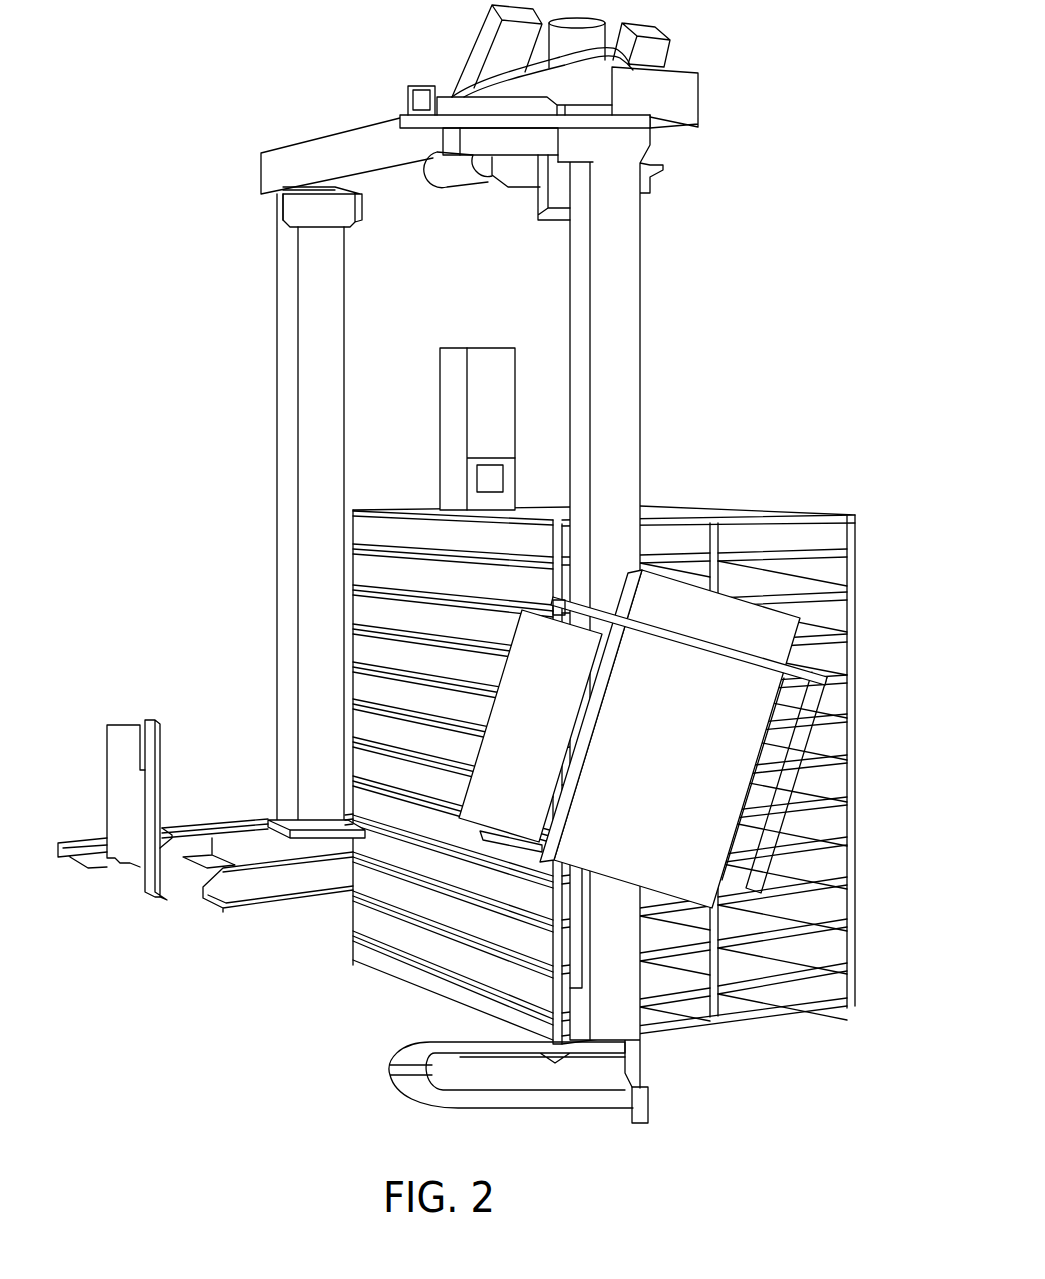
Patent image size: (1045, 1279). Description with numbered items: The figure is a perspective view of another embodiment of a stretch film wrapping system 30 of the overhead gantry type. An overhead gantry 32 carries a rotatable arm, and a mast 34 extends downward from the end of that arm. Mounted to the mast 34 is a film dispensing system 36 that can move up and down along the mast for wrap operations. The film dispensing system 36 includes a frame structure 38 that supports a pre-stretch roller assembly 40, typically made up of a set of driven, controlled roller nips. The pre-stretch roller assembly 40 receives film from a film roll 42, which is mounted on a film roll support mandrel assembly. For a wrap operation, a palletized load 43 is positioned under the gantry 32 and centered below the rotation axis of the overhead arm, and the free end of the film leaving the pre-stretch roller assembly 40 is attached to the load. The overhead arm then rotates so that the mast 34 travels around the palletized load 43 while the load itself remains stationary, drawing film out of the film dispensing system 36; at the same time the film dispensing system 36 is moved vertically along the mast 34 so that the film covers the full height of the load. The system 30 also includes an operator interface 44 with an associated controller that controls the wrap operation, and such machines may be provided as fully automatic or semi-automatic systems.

The stretch film wrapping system 30 is at (763, 393).
The overhead gantry 32 is at (386, 138).
The mast 34 is at (630, 427).
The film dispensing system 36 is at (693, 563).
The frame structure 38 is at (552, 850).
The pre-stretch roller assembly 40 is at (743, 827).
The film roll 42 is at (535, 753).
The palletized load 43 is at (855, 582).
The operator interface 44 is at (483, 478).